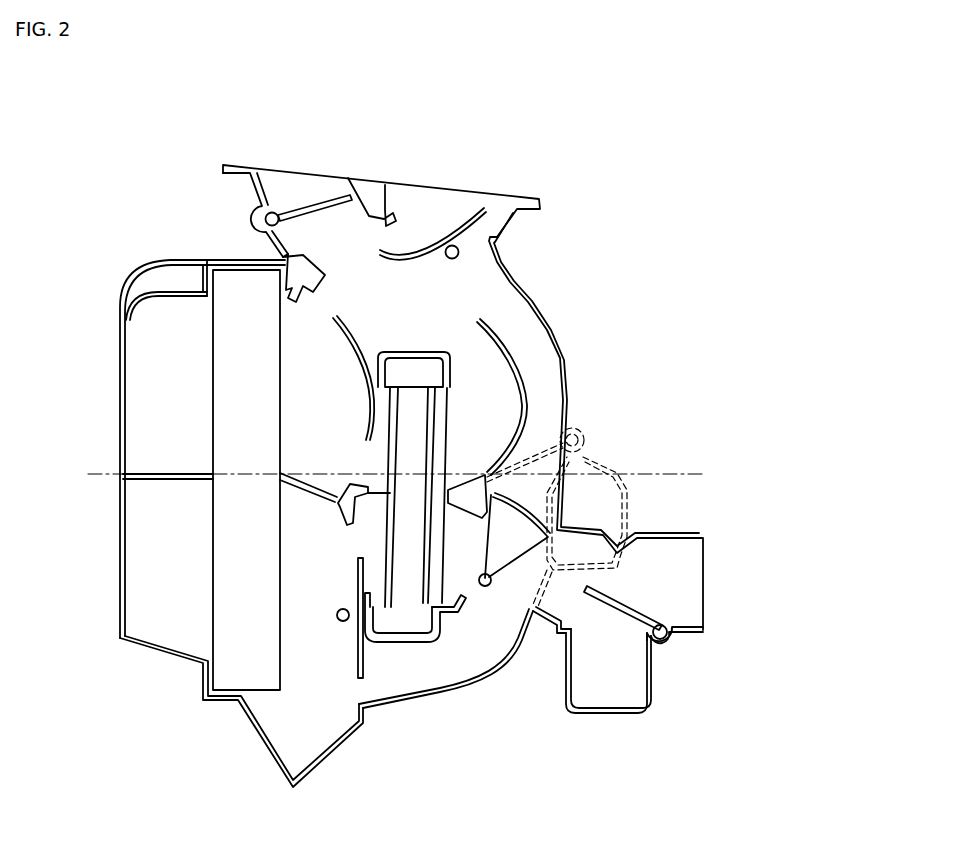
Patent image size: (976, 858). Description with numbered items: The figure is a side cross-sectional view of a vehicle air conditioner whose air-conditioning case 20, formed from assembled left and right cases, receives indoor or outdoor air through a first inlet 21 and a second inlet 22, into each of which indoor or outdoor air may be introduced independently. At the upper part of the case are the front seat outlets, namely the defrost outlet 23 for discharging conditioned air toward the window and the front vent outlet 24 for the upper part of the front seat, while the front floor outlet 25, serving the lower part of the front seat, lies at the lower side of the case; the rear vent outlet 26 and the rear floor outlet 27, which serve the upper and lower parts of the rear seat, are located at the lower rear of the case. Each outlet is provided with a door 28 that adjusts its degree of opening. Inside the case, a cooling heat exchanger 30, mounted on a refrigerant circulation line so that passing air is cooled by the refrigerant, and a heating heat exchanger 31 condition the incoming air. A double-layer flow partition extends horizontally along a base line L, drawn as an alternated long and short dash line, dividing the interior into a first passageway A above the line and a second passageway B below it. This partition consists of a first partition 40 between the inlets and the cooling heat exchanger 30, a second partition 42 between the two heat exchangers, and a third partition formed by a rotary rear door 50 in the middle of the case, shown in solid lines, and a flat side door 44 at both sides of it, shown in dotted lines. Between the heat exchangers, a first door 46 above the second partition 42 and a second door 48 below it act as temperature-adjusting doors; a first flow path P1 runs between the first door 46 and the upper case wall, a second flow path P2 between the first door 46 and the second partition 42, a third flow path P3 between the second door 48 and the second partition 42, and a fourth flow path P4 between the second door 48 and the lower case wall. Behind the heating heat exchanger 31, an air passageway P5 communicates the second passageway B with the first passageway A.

The air-conditioning case 20 is at (590, 333).
The first inlet 21 is at (145, 398).
The second inlet 22 is at (142, 577).
The defrost outlet 23 is at (280, 187).
The front vent outlet 24 is at (420, 207).
The front floor outlet 25 is at (607, 508).
The rear vent outlet 26 is at (673, 575).
The rear floor outlet 27 is at (608, 697).
The door 28 is at (317, 200).
The cooling heat exchanger 30 is at (227, 677).
The heating heat exchanger 31 is at (408, 600).
The first partition 40 is at (170, 480).
The second partition 42 is at (313, 490).
The side door 44 is at (583, 456).
The first door 46 is at (357, 343).
The second door 48 is at (353, 670).
The rear door 50 is at (530, 563).
The base line L is at (703, 470).
The first flow path P1 is at (333, 302).
The second flow path P2 is at (370, 461).
The third flow path P3 is at (368, 541).
The fourth flow path P4 is at (378, 685).
The air passageway P5 is at (530, 437).
The first passageway A is at (326, 417).
The second passageway B is at (321, 592).